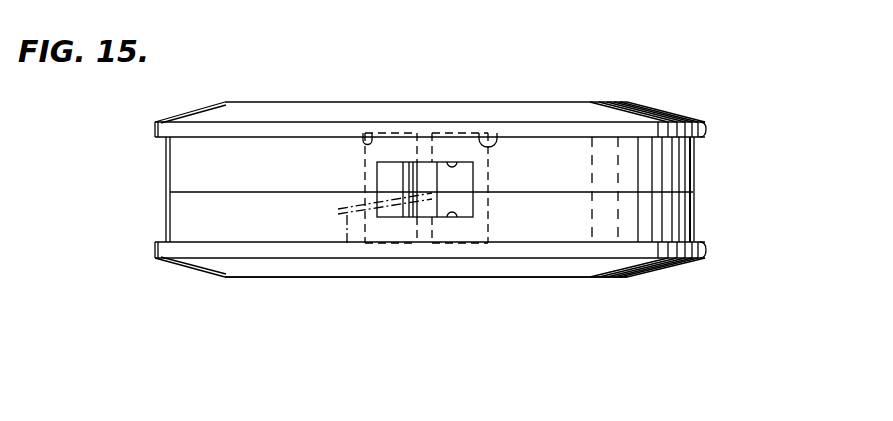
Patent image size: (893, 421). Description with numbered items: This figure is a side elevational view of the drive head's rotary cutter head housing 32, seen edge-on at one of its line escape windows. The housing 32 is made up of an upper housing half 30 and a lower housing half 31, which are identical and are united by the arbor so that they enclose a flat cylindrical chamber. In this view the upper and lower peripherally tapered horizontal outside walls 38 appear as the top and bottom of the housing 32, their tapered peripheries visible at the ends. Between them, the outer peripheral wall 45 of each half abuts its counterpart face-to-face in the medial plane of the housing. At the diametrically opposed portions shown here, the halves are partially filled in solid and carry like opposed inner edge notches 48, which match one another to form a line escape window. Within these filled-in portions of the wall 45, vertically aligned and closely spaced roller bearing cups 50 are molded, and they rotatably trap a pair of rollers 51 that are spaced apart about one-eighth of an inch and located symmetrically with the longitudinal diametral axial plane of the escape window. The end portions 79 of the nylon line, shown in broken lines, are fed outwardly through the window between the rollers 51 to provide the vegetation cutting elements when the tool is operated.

The upper housing half 30 is at (582, 102).
The lower housing half 31 is at (522, 278).
The rotary cutter head housing 32 is at (728, 147).
The peripherally tapered horizontal outside wall 38 is at (245, 112).
The outer peripheral wall 45 is at (174, 160).
The inner edge notch 48 is at (452, 162).
The roller bearing cup 50 is at (366, 146).
The roller 51 is at (390, 178).
The end portion of the line 79 is at (347, 243).